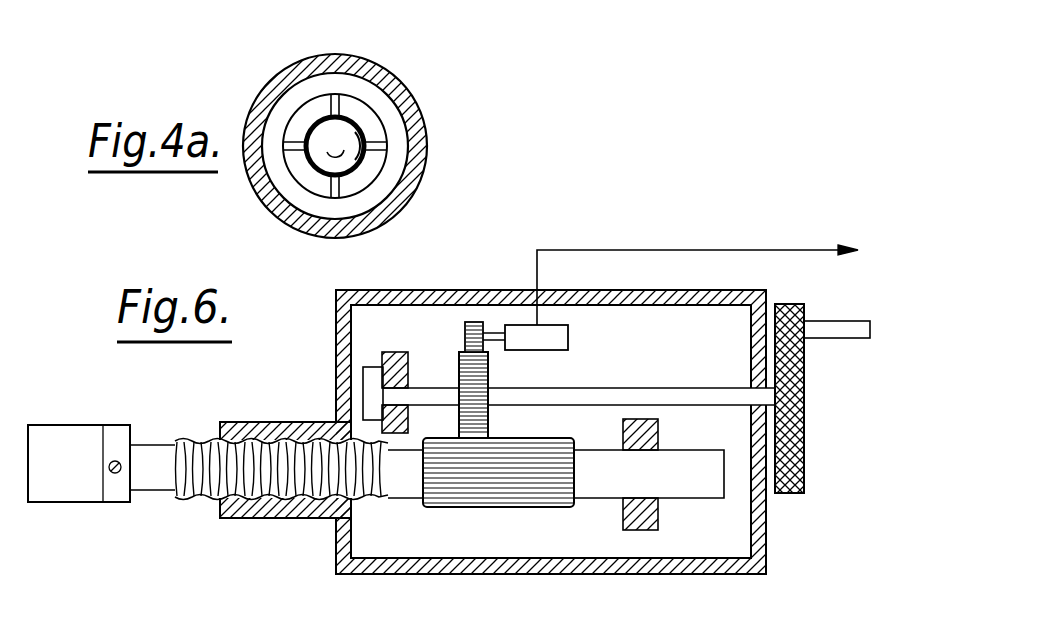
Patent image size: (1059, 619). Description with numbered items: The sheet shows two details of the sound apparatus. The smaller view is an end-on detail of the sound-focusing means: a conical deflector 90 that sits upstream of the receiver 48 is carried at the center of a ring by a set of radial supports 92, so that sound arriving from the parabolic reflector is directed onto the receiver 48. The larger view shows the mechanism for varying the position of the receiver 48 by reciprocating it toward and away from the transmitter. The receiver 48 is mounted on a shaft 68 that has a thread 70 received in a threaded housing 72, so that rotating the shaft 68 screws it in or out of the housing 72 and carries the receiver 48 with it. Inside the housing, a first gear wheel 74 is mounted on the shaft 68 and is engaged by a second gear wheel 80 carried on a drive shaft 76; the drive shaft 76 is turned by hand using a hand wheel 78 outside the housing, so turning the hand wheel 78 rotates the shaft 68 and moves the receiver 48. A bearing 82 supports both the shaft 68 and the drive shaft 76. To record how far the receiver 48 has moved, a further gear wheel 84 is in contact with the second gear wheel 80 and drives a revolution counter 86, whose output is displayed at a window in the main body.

In FIG. 6, the receiver 48 is at (48, 485).
In FIG. 6, the shaft 68 is at (153, 452).
In FIG. 6, the thread 70 is at (202, 495).
In FIG. 6, the threaded housing 72 is at (252, 507).
In FIG. 6, the first gear wheel 74 is at (487, 504).
In FIG. 6, the drive shaft 76 is at (629, 396).
In FIG. 6, the hand wheel 78 is at (803, 424).
In FIG. 6, the second gear wheel 80 is at (490, 373).
In FIG. 6, the bearing 82 is at (396, 352).
In FIG. 6, the gear wheel 84 is at (465, 336).
In FIG. 6, the revolution counter 86 is at (566, 338).
In FIG. 4A, the conical deflector 90 is at (302, 172).
In FIG. 4A, the supports 92 is at (345, 104).